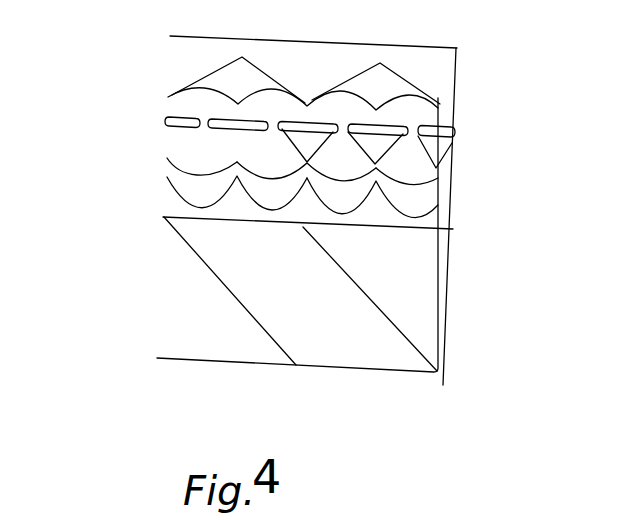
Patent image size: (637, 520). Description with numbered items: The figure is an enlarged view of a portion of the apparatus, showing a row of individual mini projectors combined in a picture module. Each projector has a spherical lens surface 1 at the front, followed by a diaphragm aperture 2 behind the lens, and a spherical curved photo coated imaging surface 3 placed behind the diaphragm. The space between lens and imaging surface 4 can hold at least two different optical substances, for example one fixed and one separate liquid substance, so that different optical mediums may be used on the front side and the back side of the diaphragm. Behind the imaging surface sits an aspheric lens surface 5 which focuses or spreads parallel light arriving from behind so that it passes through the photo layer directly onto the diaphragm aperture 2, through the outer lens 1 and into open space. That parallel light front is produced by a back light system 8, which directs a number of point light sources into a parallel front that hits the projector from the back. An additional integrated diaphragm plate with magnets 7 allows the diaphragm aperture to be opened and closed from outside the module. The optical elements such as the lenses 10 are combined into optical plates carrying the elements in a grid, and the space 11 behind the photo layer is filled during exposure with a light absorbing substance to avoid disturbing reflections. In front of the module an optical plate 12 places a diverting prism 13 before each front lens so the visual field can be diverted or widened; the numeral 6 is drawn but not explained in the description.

The lens surface 1 is at (195, 82).
The diaphragm aperture 2 is at (200, 119).
The curved photo coated imaging surface 3 is at (195, 173).
The space between lens and imaging surface 4 is at (197, 150).
The aspheric lens surface 5 is at (190, 198).
The central flat strip 6 is at (238, 128).
The magnets 7 is at (377, 145).
The back light system 8 is at (285, 289).
The lenses 10 is at (403, 117).
The space behind the photo layer 11 is at (372, 214).
The optical plate 12 is at (402, 52).
The diverting prism 13 is at (330, 73).